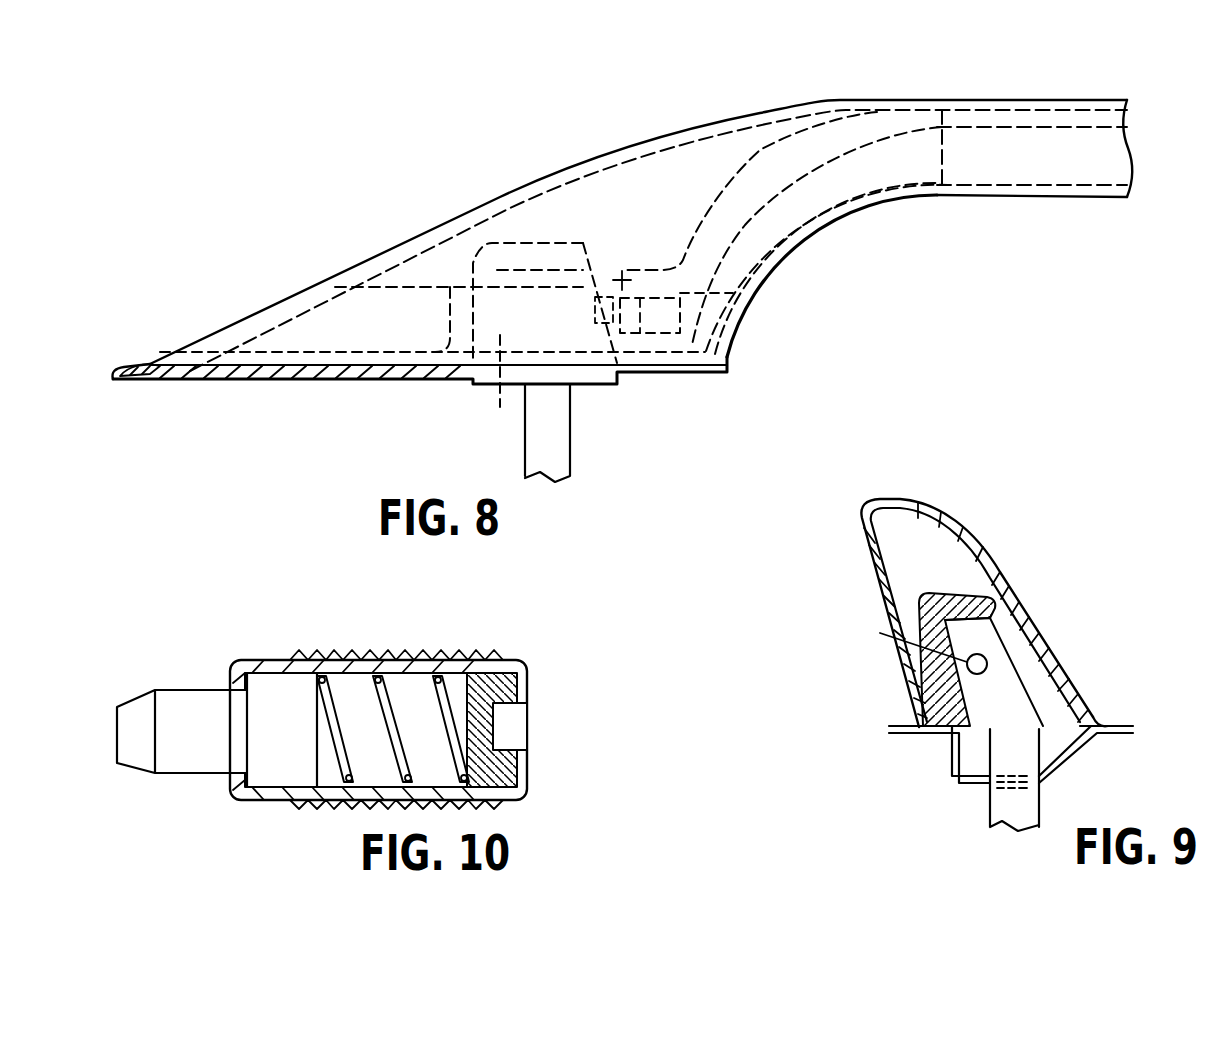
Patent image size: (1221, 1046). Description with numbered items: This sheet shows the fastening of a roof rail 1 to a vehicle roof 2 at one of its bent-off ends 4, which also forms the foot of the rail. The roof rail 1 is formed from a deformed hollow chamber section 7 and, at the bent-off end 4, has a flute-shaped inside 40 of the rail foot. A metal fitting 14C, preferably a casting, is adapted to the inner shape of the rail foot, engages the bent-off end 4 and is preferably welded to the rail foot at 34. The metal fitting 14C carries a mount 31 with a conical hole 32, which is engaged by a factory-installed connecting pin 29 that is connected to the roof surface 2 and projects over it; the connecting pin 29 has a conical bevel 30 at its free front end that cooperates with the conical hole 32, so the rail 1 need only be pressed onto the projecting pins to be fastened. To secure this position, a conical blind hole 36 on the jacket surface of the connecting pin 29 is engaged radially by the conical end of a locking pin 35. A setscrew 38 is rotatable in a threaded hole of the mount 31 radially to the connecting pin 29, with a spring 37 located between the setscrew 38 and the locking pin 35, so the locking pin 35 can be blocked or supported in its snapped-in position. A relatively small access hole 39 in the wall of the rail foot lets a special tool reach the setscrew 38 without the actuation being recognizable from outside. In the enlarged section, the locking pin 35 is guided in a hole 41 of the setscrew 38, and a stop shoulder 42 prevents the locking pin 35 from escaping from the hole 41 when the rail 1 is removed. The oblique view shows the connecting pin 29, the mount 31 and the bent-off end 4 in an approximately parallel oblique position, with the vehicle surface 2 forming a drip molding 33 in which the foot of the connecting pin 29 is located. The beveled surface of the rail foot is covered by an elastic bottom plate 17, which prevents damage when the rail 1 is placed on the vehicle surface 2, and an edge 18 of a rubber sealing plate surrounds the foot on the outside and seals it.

In FIG. 8, the roof rail 1 is at (873, 100).
In FIG. 9, the roof rail 1 is at (886, 499).
In FIG. 9, the vehicle roof 2 is at (899, 726).
In FIG. 8, the bent-off end 4 is at (553, 173).
In FIG. 9, the bent-off end 4 is at (919, 500).
In FIG. 8, the hollow chamber section 7 is at (1110, 100).
In FIG. 8, the metal fitting 14C is at (291, 367).
In FIG. 8, the bottom plate 17 is at (384, 380).
In FIG. 8, the edge 18 is at (163, 386).
In FIG. 9, the edge 18 is at (946, 736).
In FIG. 8, the connecting pin 29 is at (498, 396).
In FIG. 9, the connecting pin 29 is at (981, 632).
In FIG. 8, the conical bevel 30 is at (480, 278).
In FIG. 8, the mount 31 is at (466, 278).
In FIG. 9, the mount 31 is at (1006, 634).
In FIG. 8, the conical hole 32 is at (496, 290).
In FIG. 9, the drip molding 33 is at (1056, 756).
In FIG. 9, the weld 34 is at (1084, 712).
In FIG. 8, the locking pin 35 is at (607, 324).
In FIG. 9, the locking pin 35 is at (909, 640).
In FIG. 10, the locking pin 35 is at (198, 705).
In FIG. 8, the conical blind hole 36 is at (605, 332).
In FIG. 9, the conical blind hole 36 is at (990, 667).
In FIG. 8, the spring 37 is at (623, 277).
In FIG. 10, the spring 37 is at (347, 697).
In FIG. 8, the setscrew 38 is at (653, 330).
In FIG. 10, the setscrew 38 is at (528, 667).
In FIG. 8, the access hole 39 is at (752, 332).
In FIG. 8, the flute-shaped inside 40 is at (828, 240).
In FIG. 10, the hole 41 is at (364, 656).
In FIG. 10, the stop shoulder 42 is at (257, 775).